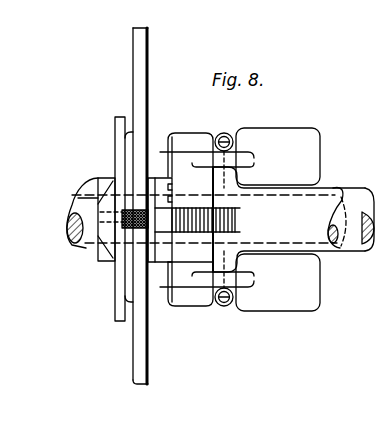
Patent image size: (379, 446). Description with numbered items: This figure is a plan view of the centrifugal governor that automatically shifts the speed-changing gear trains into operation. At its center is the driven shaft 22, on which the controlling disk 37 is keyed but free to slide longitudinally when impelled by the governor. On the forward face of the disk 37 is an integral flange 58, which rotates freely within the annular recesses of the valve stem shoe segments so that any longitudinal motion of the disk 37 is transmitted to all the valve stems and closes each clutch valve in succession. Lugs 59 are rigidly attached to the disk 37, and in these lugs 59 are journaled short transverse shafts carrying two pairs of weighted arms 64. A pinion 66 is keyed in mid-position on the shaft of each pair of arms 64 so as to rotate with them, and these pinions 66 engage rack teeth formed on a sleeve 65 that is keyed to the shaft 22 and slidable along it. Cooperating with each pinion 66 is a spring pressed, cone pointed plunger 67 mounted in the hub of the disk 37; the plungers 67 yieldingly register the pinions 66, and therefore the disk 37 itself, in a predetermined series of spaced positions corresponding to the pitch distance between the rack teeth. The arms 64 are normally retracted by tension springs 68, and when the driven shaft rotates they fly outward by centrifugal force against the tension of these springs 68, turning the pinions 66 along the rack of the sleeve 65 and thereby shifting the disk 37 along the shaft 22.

The shaft 22 is at (92, 233).
The controlling disk 37 is at (141, 48).
The flange 58 is at (115, 125).
The lugs 59 is at (154, 258).
The weighted arms 64 is at (305, 132).
The sleeve 65 is at (333, 190).
The pinions 66 is at (237, 238).
The plunger 67 is at (151, 210).
The tension springs 68 is at (225, 133).